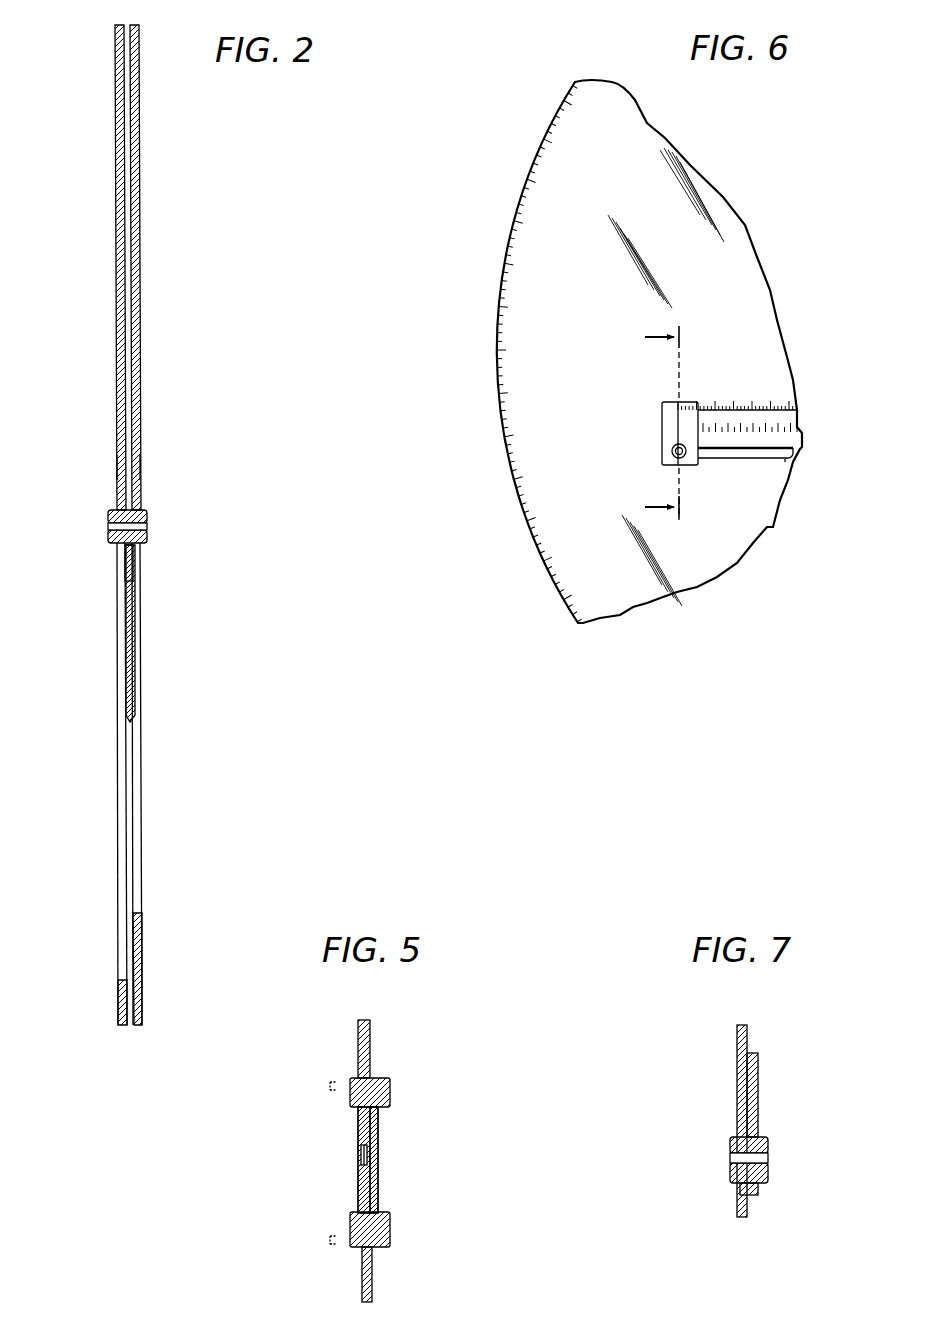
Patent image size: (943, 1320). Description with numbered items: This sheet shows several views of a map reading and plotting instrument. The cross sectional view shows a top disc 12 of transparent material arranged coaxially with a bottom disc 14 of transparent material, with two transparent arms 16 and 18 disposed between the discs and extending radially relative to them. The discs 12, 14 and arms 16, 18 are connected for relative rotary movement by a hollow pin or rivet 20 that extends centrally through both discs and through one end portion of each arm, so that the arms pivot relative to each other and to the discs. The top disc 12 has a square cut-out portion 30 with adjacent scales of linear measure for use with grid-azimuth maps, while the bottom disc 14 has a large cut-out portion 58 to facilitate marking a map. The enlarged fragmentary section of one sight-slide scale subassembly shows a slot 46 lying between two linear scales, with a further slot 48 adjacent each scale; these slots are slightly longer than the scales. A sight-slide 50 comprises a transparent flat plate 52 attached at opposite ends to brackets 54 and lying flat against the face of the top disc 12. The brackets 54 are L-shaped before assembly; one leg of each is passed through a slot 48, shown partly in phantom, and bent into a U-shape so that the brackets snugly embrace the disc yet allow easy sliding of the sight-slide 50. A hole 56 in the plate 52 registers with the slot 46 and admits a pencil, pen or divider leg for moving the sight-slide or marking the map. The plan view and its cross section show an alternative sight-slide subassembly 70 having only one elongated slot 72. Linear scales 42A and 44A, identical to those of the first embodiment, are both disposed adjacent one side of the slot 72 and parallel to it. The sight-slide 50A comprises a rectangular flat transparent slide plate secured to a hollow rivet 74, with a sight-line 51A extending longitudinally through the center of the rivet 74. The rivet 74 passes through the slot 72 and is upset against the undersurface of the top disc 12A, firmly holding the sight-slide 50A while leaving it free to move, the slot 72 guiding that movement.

In FIG. 2, the top disc 12 is at (141, 133).
In FIG. 5, the top disc 12 is at (357, 1033).
In FIG. 2, the bottom disc 14 is at (114, 108).
In FIG. 2, the transparent arm 16 is at (142, 470).
In FIG. 2, the transparent arm 18 is at (115, 465).
In FIG. 2, the hollow pin or rivet 20 is at (149, 515).
In FIG. 2, the cut-out portion 30 is at (138, 722).
In FIG. 2, the slot 46 is at (138, 616).
In FIG. 5, the slot 46 is at (359, 1161).
In FIG. 2, the slot 48 is at (136, 574).
In FIG. 5, the slot 48 is at (360, 1062).
In FIG. 5, the sight-slide 50 is at (390, 1173).
In FIG. 5, the transparent flat plate 52 is at (380, 1197).
In FIG. 5, the bracket 54 is at (391, 1086).
In FIG. 5, the hole 56 is at (380, 1160).
In FIG. 2, the large cut-out portion 58 is at (120, 978).
In FIG. 6, the top disc 12A is at (654, 351).
In FIG. 7, the top disc 12A is at (742, 1121).
In FIG. 6, the linear scale 42A is at (760, 394).
In FIG. 6, the linear scale 44A is at (820, 421).
In FIG. 6, the sight-slide 50A is at (660, 424).
In FIG. 7, the sight-slide 50A is at (760, 1078).
In FIG. 6, the sight-line 51A is at (676, 410).
In FIG. 6, the alternative sight-slide subassembly 70 is at (731, 466).
In FIG. 7, the alternative sight-slide subassembly 70 is at (722, 1088).
In FIG. 6, the elongated slot 72 is at (791, 458).
In FIG. 7, the elongated slot 72 is at (734, 1163).
In FIG. 6, the hollow rivet 74 is at (671, 452).
In FIG. 7, the hollow rivet 74 is at (770, 1145).